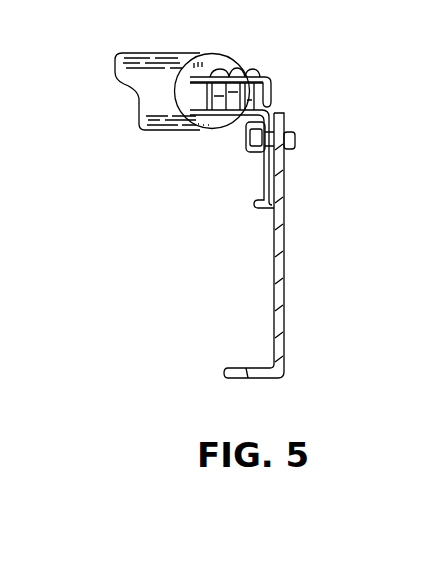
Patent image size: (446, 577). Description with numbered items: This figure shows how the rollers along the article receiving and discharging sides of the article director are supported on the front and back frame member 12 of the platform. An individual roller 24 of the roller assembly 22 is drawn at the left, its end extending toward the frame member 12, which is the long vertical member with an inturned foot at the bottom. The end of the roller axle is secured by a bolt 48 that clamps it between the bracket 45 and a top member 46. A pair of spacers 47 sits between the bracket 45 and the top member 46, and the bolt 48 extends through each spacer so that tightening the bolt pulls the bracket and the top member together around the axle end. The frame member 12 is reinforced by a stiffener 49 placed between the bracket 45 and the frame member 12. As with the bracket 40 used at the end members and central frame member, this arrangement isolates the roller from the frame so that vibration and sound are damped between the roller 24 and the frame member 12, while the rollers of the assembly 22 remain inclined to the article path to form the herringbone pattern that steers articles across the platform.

The front and back frame member 12 is at (277, 268).
The roller assembly 22 is at (174, 132).
The roller 24 is at (126, 90).
The bracket 40 is at (300, 110).
The bracket 45 is at (222, 129).
The top member 46 is at (272, 97).
The spacer 47 is at (210, 92).
The bolt 48 is at (250, 70).
The stiffener 49 is at (267, 181).